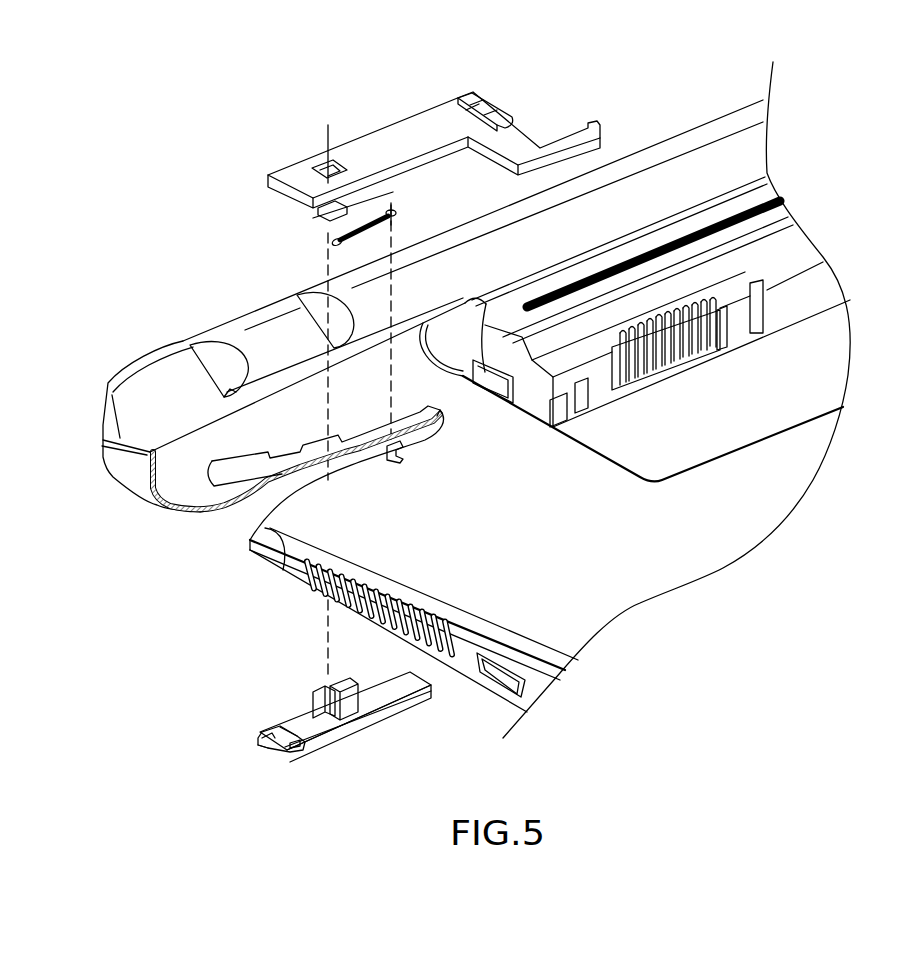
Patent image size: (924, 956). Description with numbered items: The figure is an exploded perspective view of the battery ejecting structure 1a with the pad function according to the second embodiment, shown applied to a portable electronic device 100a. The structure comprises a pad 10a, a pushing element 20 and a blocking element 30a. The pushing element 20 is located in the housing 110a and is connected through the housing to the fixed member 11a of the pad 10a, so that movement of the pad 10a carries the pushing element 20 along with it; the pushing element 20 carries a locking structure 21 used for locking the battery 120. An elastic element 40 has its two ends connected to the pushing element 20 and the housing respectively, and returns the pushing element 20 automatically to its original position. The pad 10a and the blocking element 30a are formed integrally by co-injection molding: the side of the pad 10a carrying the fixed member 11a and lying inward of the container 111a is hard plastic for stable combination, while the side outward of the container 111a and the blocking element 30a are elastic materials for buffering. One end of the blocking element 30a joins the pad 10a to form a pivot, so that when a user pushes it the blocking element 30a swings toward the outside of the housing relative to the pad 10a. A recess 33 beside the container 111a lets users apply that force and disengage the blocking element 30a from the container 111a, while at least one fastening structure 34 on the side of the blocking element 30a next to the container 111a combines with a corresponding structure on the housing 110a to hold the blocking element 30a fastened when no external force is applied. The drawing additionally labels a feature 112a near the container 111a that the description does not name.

The battery ejecting structure 1a is at (401, 433).
The pad 10a is at (336, 721).
The fixed member 11a is at (320, 685).
The pushing element 20 is at (387, 135).
The locking structure 21 is at (483, 97).
The blocking element 30a is at (271, 744).
The recess 33 is at (272, 747).
The fastening structure 34 is at (295, 745).
The elastic element 40 is at (398, 213).
The portable electronic device 100a is at (503, 400).
The housing 110a is at (675, 558).
The container 111a is at (353, 450).
The slot 112a is at (312, 445).
The battery 120 is at (803, 238).